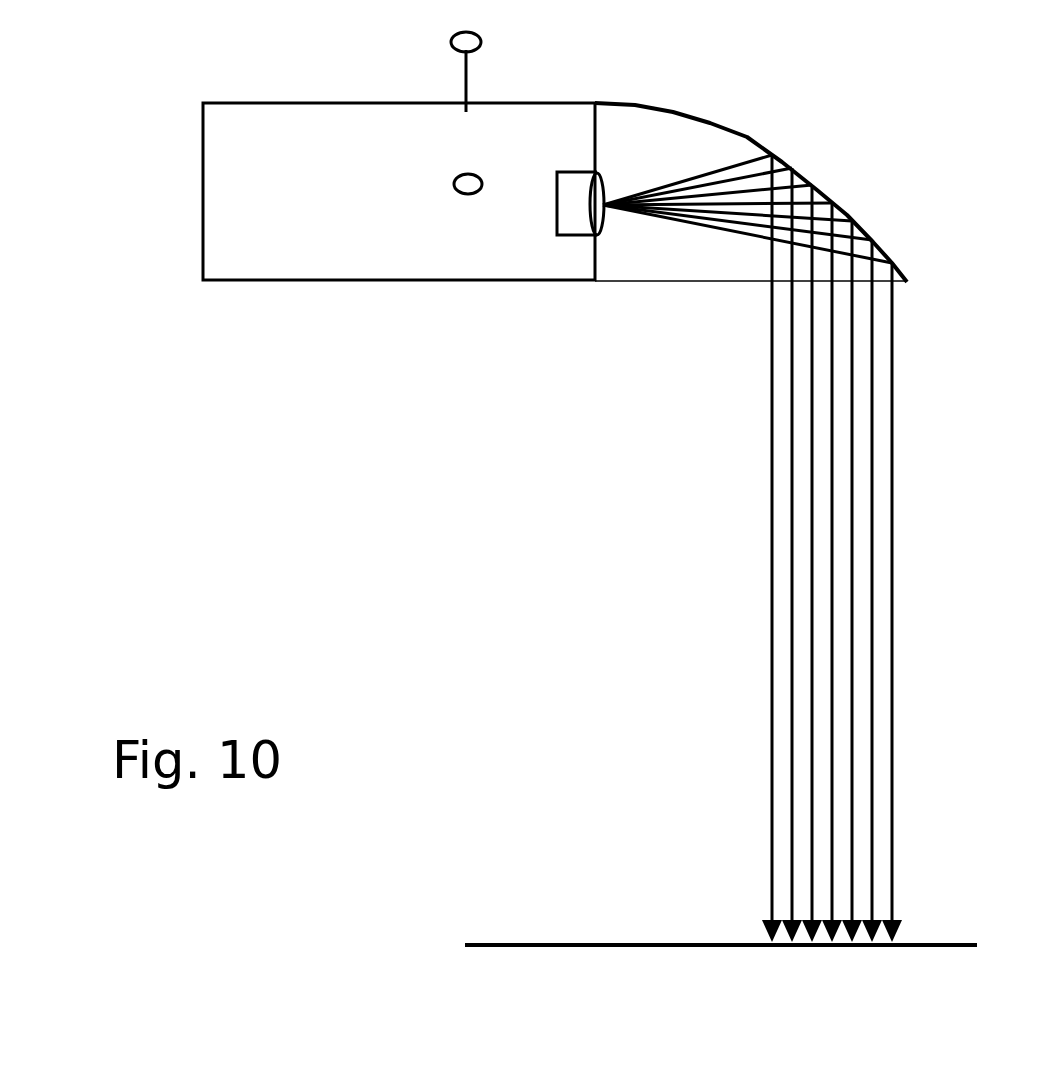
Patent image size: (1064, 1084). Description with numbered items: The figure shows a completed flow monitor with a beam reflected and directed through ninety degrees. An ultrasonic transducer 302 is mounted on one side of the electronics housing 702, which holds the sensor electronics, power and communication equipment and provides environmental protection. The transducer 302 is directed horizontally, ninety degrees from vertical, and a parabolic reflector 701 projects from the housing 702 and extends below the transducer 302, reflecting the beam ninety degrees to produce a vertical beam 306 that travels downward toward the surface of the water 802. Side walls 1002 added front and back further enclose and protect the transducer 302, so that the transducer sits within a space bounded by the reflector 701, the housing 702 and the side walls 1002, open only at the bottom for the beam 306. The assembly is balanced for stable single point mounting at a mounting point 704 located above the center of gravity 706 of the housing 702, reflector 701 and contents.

The ultrasonic transducer 302 is at (582, 237).
The vertical beam 306 is at (873, 465).
The reflector 701 is at (745, 133).
The electronics housing 702 is at (202, 208).
The mounting point 704 is at (453, 53).
The center of gravity 706 is at (453, 183).
The surface of the water 802 is at (668, 940).
The side walls 1002 is at (668, 274).